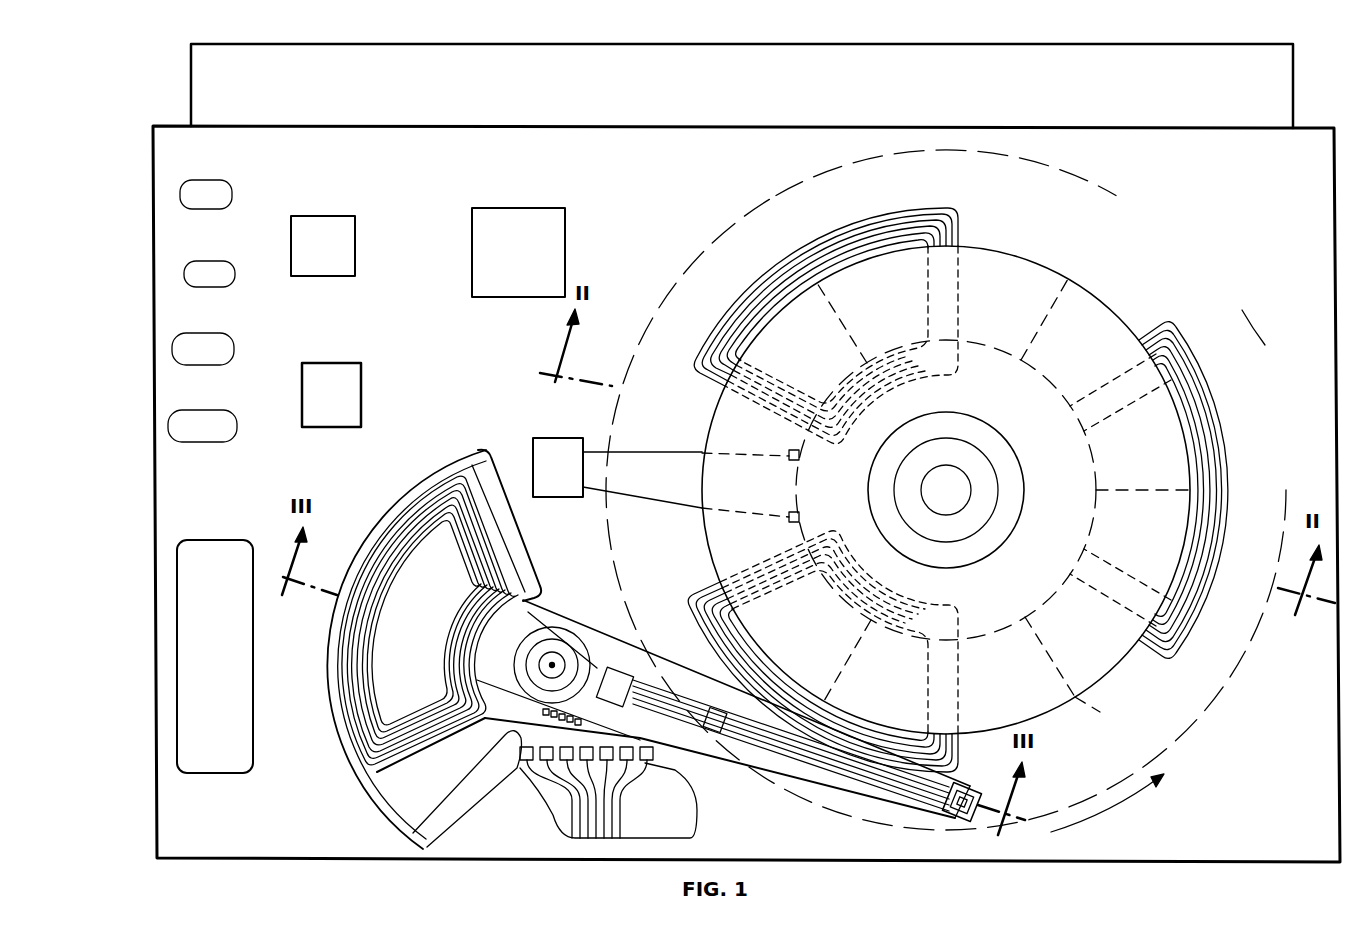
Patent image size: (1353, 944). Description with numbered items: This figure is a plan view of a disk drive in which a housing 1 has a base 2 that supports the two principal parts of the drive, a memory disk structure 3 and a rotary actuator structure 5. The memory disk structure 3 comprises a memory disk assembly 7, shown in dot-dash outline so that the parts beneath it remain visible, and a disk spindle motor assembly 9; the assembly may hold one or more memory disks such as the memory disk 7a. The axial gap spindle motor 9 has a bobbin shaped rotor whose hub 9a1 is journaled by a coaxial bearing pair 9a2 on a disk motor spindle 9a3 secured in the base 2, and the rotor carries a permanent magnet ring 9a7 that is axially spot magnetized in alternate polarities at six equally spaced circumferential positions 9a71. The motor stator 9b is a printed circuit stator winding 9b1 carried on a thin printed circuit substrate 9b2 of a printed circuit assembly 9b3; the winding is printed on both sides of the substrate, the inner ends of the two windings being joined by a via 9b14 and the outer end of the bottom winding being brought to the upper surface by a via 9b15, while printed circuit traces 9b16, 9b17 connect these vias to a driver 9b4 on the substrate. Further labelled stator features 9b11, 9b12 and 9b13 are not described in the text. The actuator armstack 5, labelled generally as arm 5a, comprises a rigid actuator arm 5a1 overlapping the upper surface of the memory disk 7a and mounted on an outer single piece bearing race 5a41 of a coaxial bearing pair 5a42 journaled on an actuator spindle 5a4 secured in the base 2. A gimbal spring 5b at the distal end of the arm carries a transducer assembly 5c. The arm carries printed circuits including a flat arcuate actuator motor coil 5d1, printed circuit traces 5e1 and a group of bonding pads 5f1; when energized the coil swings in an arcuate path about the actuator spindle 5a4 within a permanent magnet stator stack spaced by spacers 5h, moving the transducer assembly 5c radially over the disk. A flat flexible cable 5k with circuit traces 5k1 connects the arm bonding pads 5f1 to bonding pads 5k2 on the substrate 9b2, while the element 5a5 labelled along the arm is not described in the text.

The housing 1 is at (150, 470).
The base 2 is at (170, 493).
The memory disk structure 3 is at (1097, 350).
The actuator structure 5 is at (537, 744).
The arm 5a is at (798, 790).
The rigid actuator arm 5a1 is at (760, 765).
The actuator spindle 5a4 is at (553, 662).
The outer bearing race 5a41 is at (560, 658).
The coaxial bearing pair 5a42 is at (576, 652).
The flexible wiring on arm 5a5 is at (846, 786).
The gimbal spring 5b is at (968, 790).
The transducer assembly 5c is at (946, 808).
The actuator motor coil 5d1 is at (430, 520).
The printed circuit traces 5e1 is at (500, 690).
The bonding pads 5f1 is at (584, 720).
The spacers 5h is at (522, 518).
The flat flexible cable 5k is at (690, 834).
The circuit traces 5k1 is at (608, 780).
The bonding pads 5k2 is at (545, 770).
The memory disk assembly 7 is at (1185, 240).
The memory disk 7a is at (1265, 345).
The disk spindle motor assembly 9 is at (1117, 300).
The hub 9a1 is at (1020, 505).
The coaxial bearing pair 9a2 is at (995, 487).
The disk motor spindle 9a3 is at (955, 490).
The permanent magnet ring 9a7 is at (905, 345).
The circumferential positions 9a71 is at (1102, 712).
The motor stator 9b is at (1090, 255).
The printed circuit stator winding 9b1 is at (937, 203).
The coil side portion 9b11 is at (965, 290).
The stator coil 9b12 is at (1155, 356).
The coil outer portion 9b13 is at (773, 255).
The via 9b14 is at (835, 530).
The via 9b15 is at (787, 462).
The printed circuit trace 9b16 is at (690, 512).
The printed circuit trace 9b17 is at (690, 452).
The printed circuit substrate 9b2 is at (822, 140).
The printed circuit assembly 9b3 is at (641, 215).
The driver 9b4 is at (567, 436).